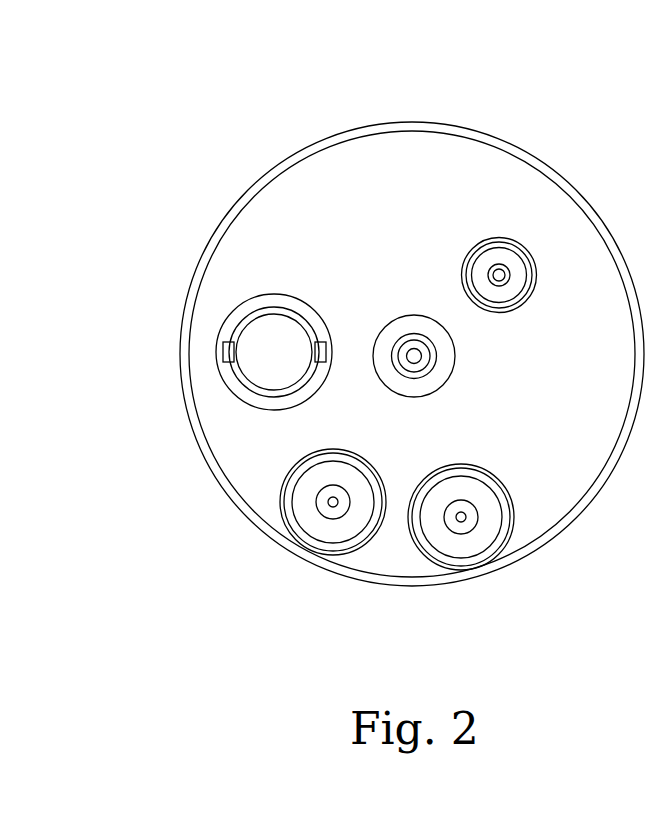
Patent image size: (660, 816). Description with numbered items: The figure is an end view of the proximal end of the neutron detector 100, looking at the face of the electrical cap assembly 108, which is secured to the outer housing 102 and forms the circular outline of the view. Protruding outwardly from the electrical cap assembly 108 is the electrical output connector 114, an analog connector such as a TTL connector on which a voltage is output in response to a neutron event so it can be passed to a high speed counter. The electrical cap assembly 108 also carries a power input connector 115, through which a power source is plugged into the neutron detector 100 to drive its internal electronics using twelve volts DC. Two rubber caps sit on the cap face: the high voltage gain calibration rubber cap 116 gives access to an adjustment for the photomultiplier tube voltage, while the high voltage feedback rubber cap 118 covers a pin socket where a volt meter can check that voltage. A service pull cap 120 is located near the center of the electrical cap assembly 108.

The neutron detector 100 is at (122, 108).
The outer housing 102 is at (413, 122).
The electrical cap assembly 108 is at (597, 252).
The electrical output connector 114 is at (243, 331).
The power input connector 115 is at (468, 260).
The high voltage gain calibration rubber cap 116 is at (315, 525).
The high voltage feedback rubber cap 118 is at (477, 540).
The service pull cap 120 is at (445, 357).